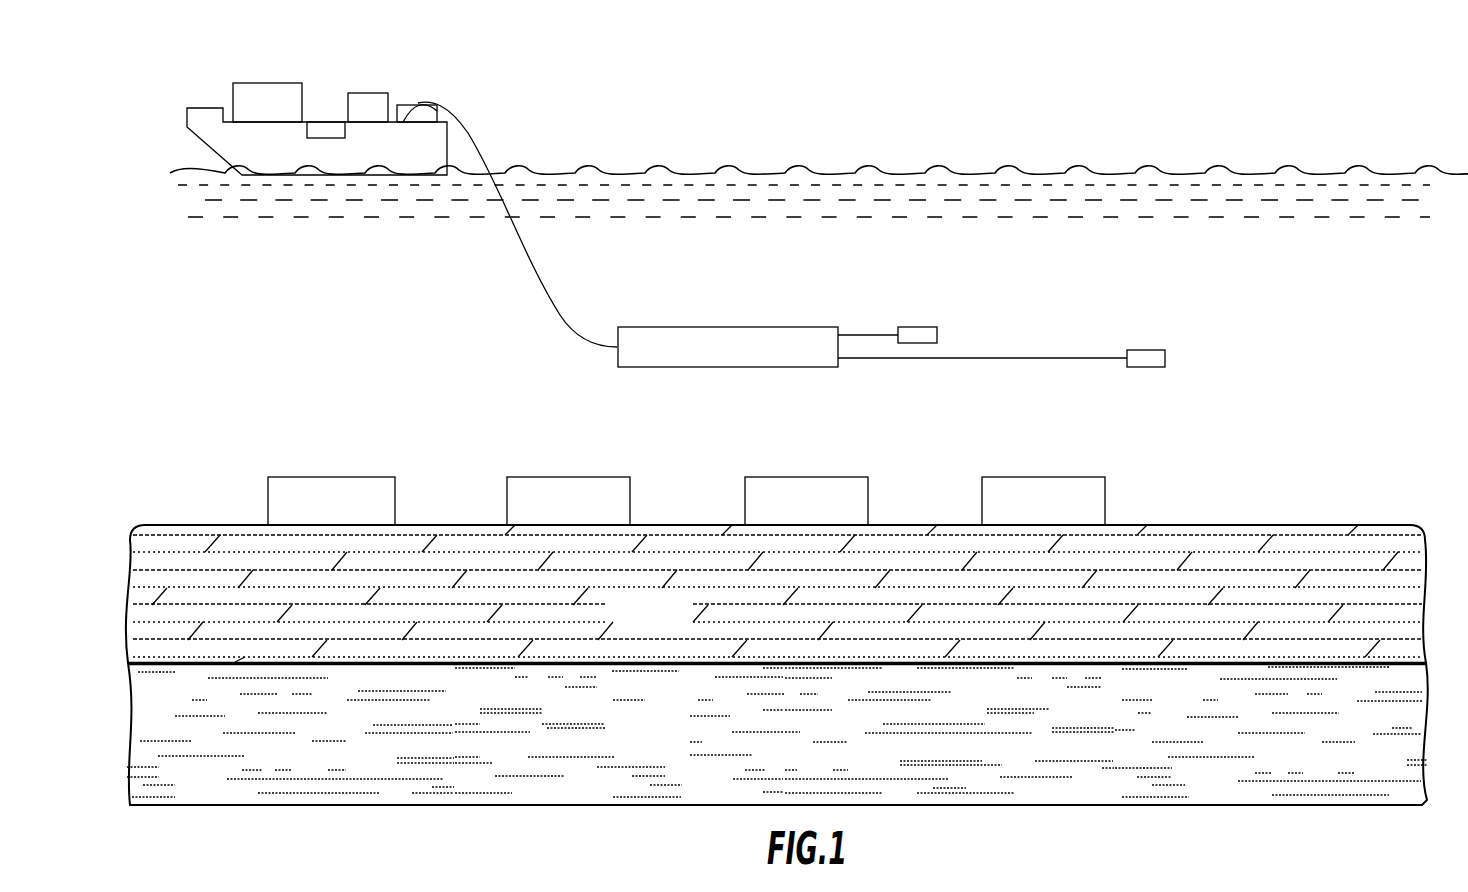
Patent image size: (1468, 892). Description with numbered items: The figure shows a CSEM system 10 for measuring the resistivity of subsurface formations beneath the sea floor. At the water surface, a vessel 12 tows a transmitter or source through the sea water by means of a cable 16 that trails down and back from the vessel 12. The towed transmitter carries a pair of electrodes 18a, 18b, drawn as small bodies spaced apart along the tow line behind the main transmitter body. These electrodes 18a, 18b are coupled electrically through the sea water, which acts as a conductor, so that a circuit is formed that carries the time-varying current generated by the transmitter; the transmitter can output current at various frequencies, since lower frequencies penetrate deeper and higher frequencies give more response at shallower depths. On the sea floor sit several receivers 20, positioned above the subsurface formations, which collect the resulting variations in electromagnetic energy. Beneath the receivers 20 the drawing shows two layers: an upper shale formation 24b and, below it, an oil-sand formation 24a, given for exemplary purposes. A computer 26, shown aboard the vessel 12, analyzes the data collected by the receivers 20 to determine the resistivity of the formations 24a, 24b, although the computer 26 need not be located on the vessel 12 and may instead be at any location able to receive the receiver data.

The CSEM system 10 is at (750, 113).
The vessel 12 is at (278, 82).
The cable 16 is at (525, 270).
The electrode 18a is at (943, 320).
The electrode 18b is at (1172, 352).
The receivers 20 is at (348, 517).
The oil-sand formation 24a is at (673, 751).
The shale formation 24b is at (673, 625).
The computer 26 is at (324, 138).